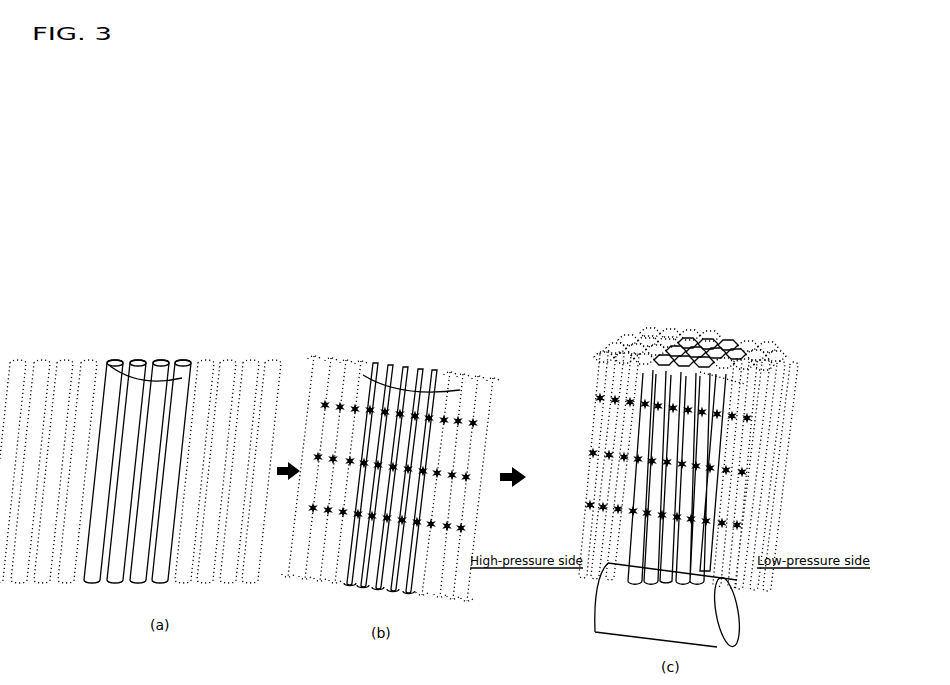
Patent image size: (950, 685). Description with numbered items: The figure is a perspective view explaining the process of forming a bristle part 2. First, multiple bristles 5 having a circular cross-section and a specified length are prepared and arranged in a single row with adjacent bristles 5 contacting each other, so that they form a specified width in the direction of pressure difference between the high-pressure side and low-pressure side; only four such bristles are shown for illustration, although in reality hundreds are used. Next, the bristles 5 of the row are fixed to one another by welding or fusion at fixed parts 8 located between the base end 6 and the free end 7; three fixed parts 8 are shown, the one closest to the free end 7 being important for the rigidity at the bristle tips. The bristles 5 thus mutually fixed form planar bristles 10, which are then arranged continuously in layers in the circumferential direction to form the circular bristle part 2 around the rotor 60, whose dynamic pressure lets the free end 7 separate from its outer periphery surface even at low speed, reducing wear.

The bristle part 2 is at (690, 340).
The bristles 5 is at (108, 397).
The base end 6 is at (124, 362).
The free end 7 is at (160, 586).
The fixed parts 8 is at (440, 412).
The planar bristles 10 is at (430, 368).
The rotor 60 is at (678, 620).